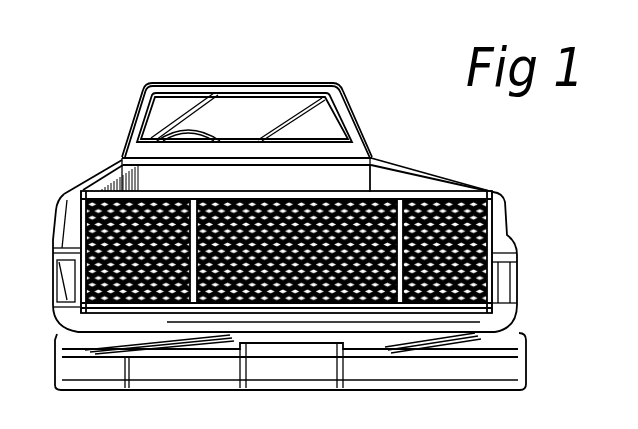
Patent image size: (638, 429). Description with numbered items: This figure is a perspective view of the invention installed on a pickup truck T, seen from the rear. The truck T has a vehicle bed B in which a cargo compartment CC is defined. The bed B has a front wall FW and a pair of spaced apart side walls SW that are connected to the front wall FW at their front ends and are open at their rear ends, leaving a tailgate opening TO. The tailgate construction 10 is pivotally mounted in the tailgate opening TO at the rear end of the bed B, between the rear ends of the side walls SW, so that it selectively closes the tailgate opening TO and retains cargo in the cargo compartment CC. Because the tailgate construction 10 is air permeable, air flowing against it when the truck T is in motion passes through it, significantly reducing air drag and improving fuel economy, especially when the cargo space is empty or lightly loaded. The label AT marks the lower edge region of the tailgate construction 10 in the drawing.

The pickup truck T is at (366, 101).
The front wall FW is at (121, 161).
The side walls SW is at (104, 174).
The tailgate opening TO is at (77, 197).
The cargo compartment CC is at (369, 177).
The vehicle bed B is at (410, 167).
The tailgate construction 10 is at (287, 192).
The tailgate pivot axis AT is at (323, 348).